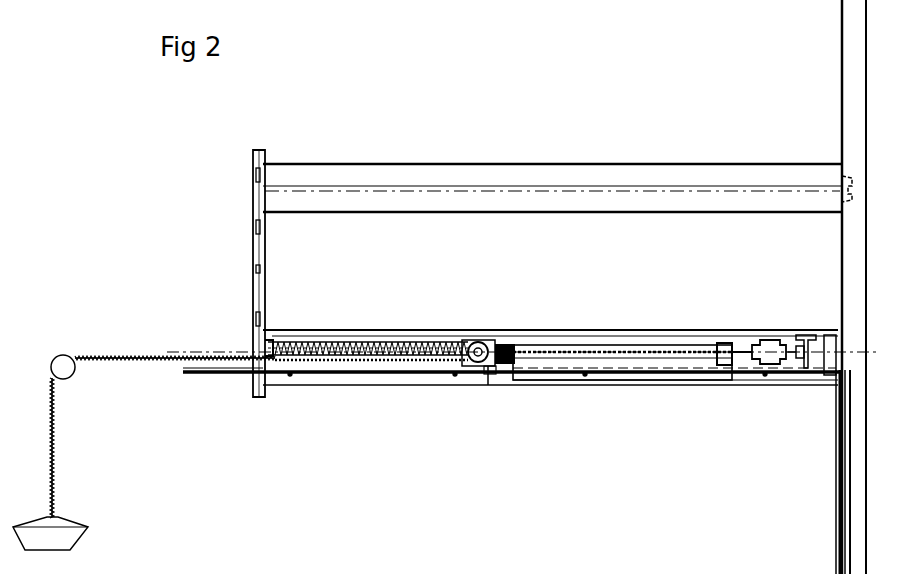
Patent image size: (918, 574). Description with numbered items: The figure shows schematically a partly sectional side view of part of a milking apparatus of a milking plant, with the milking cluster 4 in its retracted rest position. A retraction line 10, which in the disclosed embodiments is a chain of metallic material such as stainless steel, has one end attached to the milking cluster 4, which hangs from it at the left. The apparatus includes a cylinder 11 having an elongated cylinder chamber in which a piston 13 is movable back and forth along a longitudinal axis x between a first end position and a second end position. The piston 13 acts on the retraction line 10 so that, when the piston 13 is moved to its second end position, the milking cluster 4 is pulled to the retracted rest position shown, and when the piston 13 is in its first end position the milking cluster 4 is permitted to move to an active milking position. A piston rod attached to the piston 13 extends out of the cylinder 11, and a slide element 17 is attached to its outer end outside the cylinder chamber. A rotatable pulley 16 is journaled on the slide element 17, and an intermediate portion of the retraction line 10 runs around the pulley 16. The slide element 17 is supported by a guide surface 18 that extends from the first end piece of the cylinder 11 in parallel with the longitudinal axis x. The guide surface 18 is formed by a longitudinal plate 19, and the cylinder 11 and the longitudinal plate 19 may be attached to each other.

The milking cluster 4 is at (63, 537).
The retraction line 10 is at (107, 357).
The cylinder 11 is at (598, 363).
The piston 13 is at (722, 363).
The rotatable pulley 16 is at (467, 373).
The slide element 17 is at (488, 373).
The guide surface 18 is at (370, 370).
The longitudinal plate 19 is at (323, 373).
The longitudinal axis x is at (198, 350).